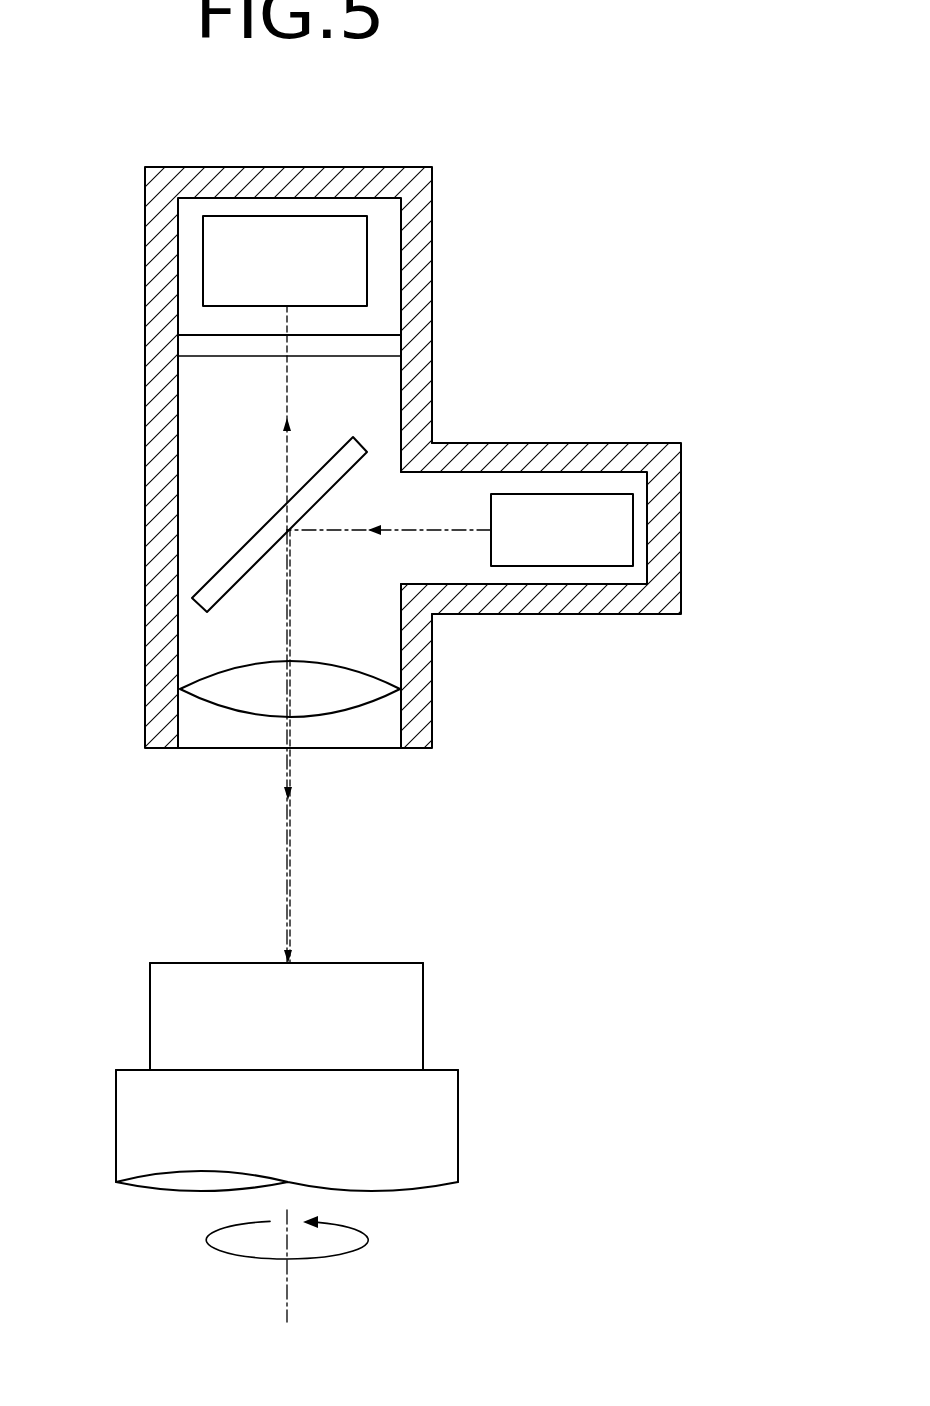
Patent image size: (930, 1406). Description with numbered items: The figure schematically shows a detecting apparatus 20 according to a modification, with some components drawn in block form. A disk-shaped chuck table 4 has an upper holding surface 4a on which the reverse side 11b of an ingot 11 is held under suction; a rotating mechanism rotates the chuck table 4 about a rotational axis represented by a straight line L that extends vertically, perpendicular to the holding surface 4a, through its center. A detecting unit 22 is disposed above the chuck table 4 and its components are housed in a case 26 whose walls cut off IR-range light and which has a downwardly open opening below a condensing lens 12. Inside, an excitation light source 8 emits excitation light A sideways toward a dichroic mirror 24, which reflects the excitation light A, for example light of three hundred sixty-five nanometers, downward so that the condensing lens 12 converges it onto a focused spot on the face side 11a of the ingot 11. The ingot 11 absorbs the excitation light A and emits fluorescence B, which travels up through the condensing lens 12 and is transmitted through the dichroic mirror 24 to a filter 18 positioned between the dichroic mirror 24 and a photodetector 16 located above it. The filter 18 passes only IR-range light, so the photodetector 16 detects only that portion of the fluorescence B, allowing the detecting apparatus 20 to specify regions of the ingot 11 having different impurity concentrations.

The detecting apparatus 20 is at (623, 158).
The case 26 is at (152, 403).
The detecting unit 22 is at (518, 422).
The photodetector 16 is at (290, 215).
The filter 18 is at (198, 337).
The dichroic mirror 24 is at (215, 580).
The condensing lens 12 is at (203, 683).
The excitation light source 8 is at (563, 566).
The ingot 11 is at (415, 1003).
The face side 11a is at (188, 962).
The reverse side 11b is at (197, 1069).
The chuck table 4 is at (450, 1152).
The holding surface 4a is at (445, 1068).
The excitation light A is at (395, 532).
The fluorescence B is at (287, 462).
The straight line L is at (288, 1302).